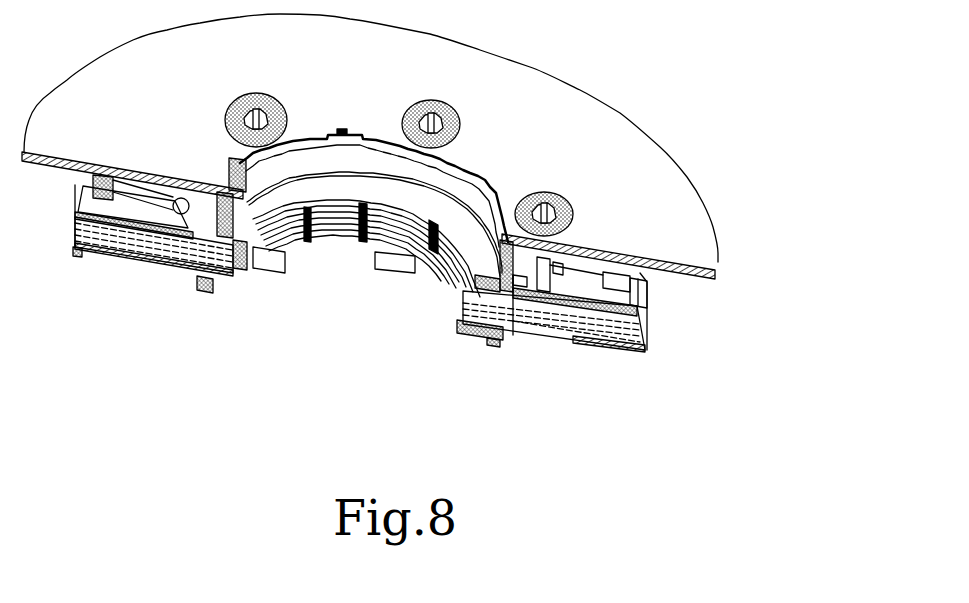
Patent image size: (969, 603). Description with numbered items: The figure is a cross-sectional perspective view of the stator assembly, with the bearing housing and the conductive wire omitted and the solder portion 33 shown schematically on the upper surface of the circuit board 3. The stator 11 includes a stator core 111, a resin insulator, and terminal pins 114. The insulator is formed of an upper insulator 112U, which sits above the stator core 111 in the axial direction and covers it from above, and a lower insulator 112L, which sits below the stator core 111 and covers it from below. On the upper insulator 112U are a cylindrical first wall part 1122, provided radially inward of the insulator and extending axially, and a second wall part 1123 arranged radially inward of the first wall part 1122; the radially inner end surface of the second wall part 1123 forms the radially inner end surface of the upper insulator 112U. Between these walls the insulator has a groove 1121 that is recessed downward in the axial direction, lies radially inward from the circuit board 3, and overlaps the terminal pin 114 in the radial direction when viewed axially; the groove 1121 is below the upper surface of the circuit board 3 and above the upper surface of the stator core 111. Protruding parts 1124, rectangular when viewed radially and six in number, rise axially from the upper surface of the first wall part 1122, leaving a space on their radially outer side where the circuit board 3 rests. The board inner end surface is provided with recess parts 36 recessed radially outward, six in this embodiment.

The circuit board 3 is at (547, 90).
The solder portion 33 is at (271, 98).
The terminal pin 114 is at (575, 196).
The stator 11 is at (150, 296).
The recess part 36 is at (487, 188).
The protruding part 1124 is at (372, 238).
The second wall part 1123 is at (447, 278).
The lower insulator 112L is at (600, 350).
The upper insulator 112U is at (537, 340).
The stator core 111 is at (648, 333).
The first wall part 1122 is at (507, 335).
The groove 1121 is at (465, 334).